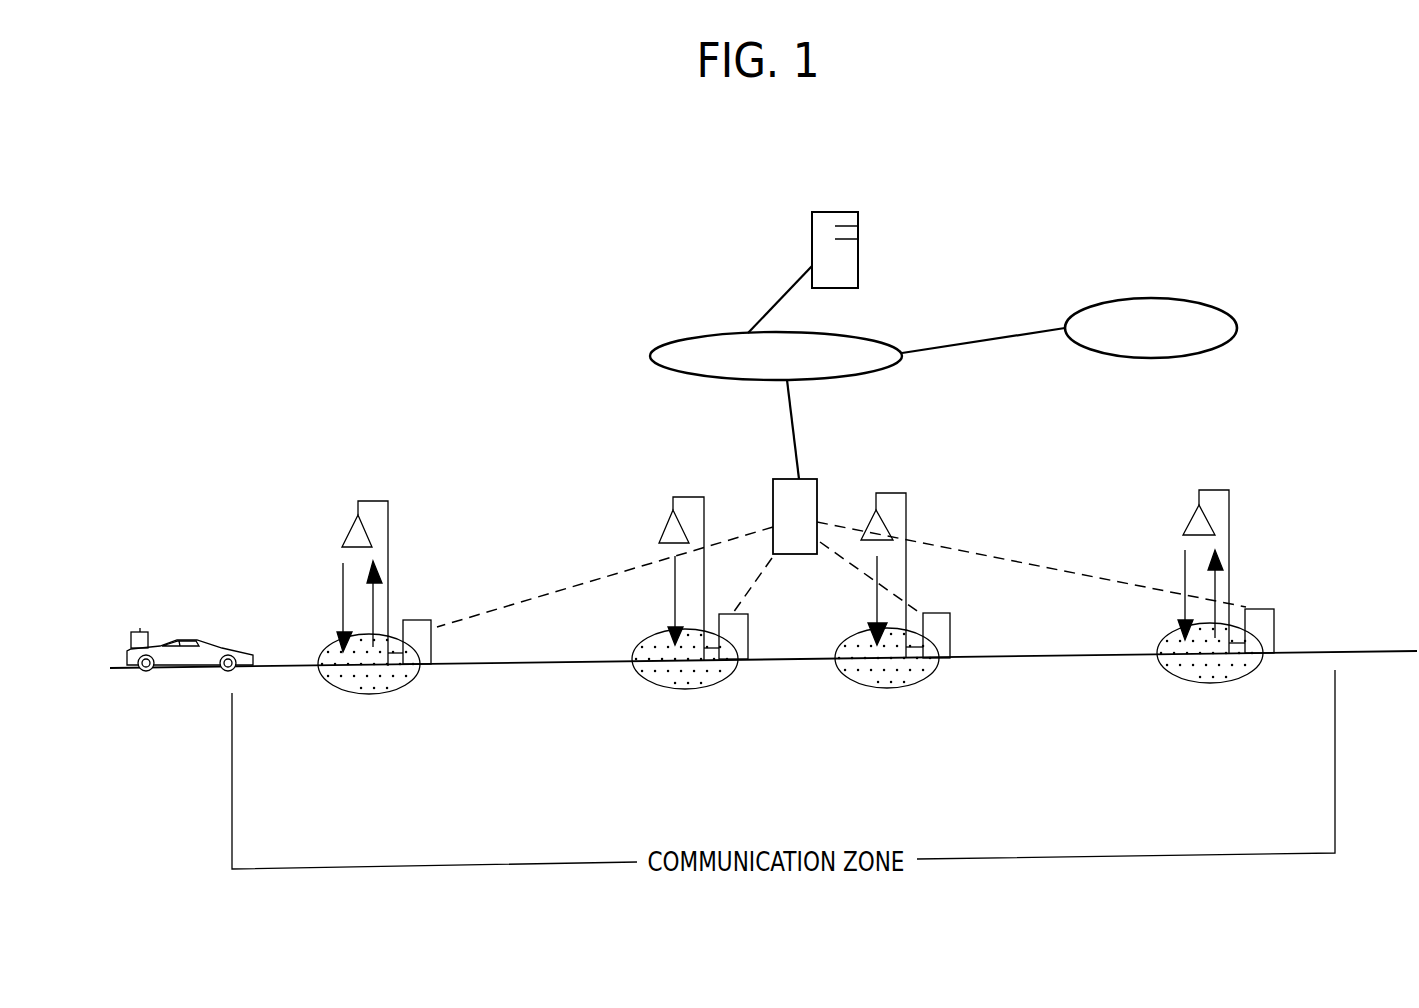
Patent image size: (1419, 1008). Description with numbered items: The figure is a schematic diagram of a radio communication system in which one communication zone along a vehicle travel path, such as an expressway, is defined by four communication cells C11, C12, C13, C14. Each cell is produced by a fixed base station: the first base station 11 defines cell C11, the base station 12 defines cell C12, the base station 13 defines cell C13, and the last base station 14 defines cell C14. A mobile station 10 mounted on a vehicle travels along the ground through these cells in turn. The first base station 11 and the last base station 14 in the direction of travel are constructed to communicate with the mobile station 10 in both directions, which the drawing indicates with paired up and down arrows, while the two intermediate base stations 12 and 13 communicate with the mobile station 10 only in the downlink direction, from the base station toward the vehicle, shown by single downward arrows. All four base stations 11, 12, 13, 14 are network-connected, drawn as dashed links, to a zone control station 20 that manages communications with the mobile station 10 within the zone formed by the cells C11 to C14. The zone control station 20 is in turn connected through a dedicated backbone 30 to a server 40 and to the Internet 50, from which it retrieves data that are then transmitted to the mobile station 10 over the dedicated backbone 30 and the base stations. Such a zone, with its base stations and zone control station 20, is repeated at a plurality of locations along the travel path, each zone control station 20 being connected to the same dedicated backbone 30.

The mobile station 10 is at (138, 632).
The first base station 11 is at (417, 620).
The base station 12 is at (748, 631).
The base station 13 is at (950, 627).
The last base station 14 is at (1274, 623).
The zone control station 20 is at (817, 492).
The dedicated backbone 30 is at (872, 373).
The server 40 is at (835, 212).
The Internet 50 is at (1177, 298).
The communication cell C11 is at (360, 692).
The communication cell C12 is at (687, 686).
The communication cell C13 is at (892, 682).
The communication cell C14 is at (1215, 680).